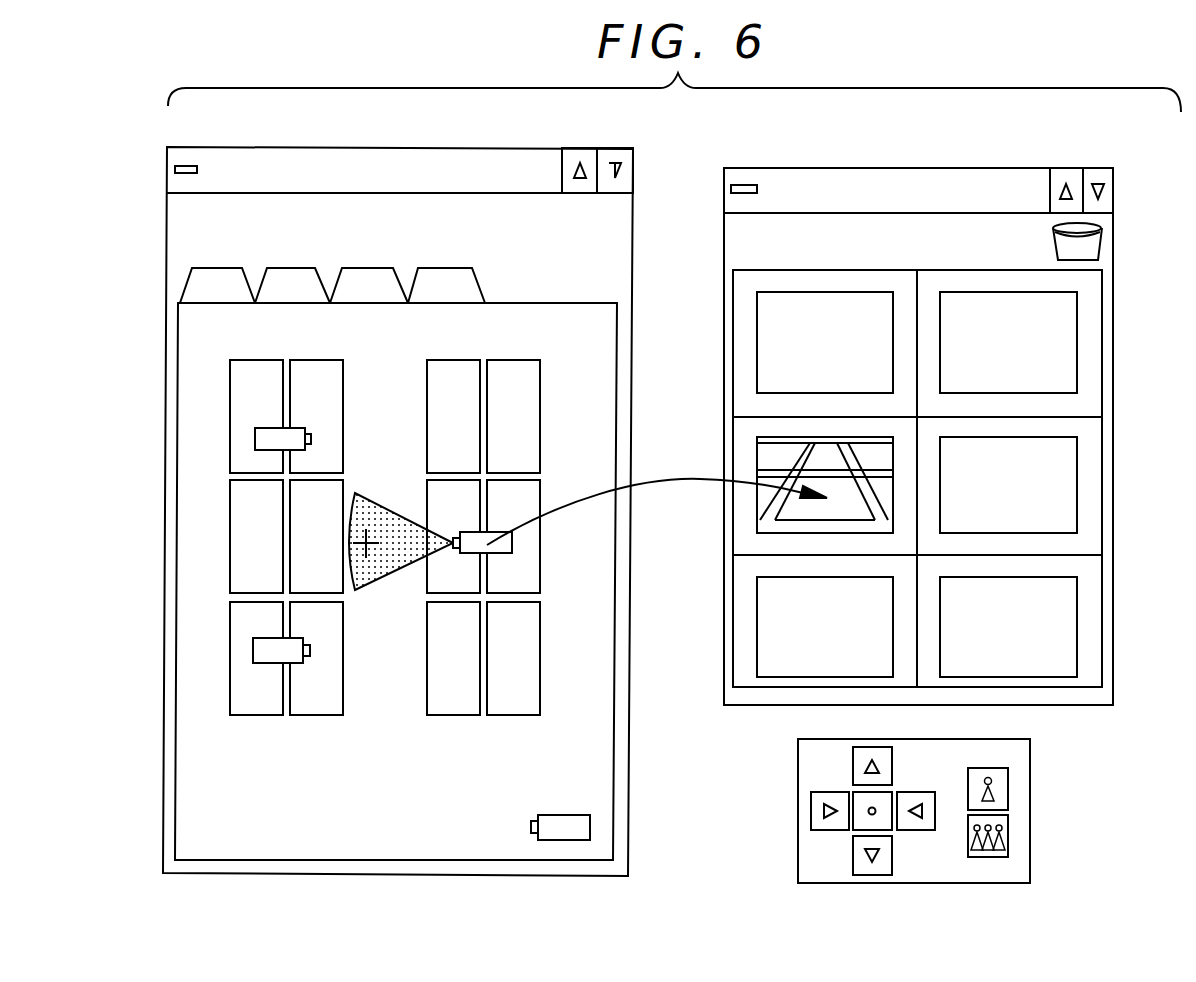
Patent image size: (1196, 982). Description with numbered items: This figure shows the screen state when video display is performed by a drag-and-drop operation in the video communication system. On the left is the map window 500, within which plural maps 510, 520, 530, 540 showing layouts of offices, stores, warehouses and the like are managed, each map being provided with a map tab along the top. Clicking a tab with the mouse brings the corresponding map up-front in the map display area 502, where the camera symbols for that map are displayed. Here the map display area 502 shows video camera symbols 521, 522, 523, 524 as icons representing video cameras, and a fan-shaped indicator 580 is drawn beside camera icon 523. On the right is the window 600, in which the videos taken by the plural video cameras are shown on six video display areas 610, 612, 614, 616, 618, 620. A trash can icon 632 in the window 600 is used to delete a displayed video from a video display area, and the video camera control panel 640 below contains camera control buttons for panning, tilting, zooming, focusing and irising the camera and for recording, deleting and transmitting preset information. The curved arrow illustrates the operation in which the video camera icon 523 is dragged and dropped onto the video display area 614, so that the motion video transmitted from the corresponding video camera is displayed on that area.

The map window 500 is at (402, 147).
The map display area 502 is at (563, 303).
The map 510 is at (227, 268).
The map 520 is at (300, 268).
The map 530 is at (378, 268).
The map 540 is at (453, 268).
The video camera symbol 521 is at (296, 428).
The video camera symbol 522 is at (567, 815).
The video camera symbol 523 is at (483, 532).
The video camera symbol 524 is at (297, 638).
The field of view indicator 580 is at (365, 494).
The window 600 is at (948, 160).
The video display area 610 is at (746, 361).
The video display area 612 is at (1087, 330).
The video display area 614 is at (746, 497).
The video display area 616 is at (1085, 478).
The video display area 618 is at (746, 635).
The video display area 620 is at (1085, 620).
The trash can icon 632 is at (1102, 250).
The video camera control panel 640 is at (1033, 790).